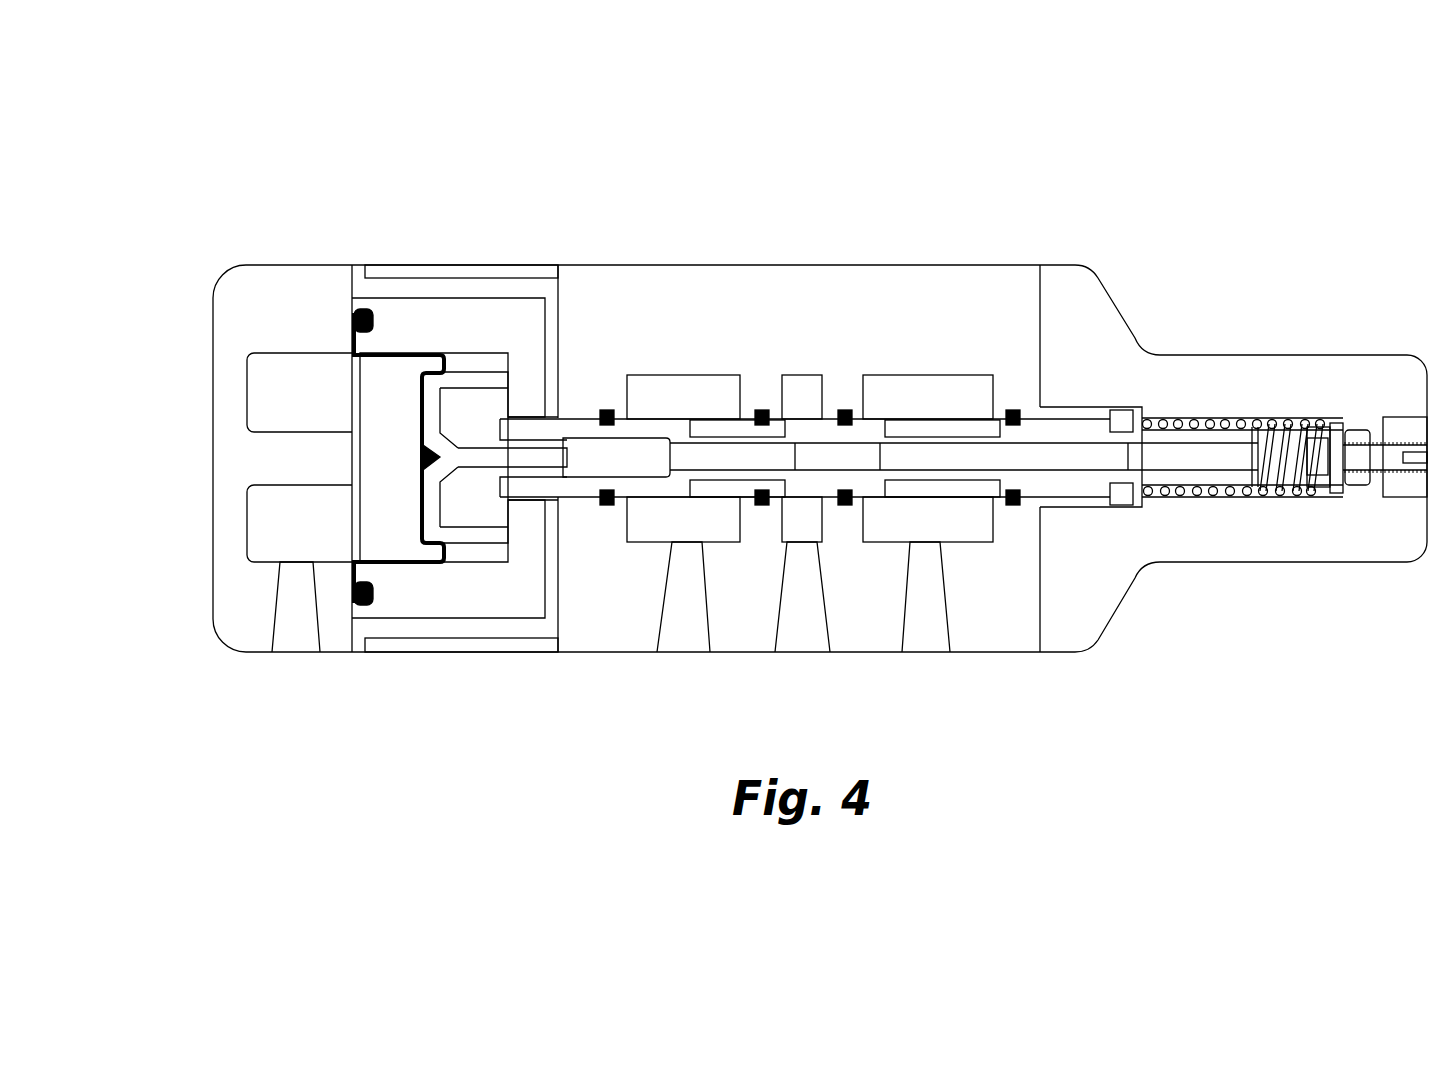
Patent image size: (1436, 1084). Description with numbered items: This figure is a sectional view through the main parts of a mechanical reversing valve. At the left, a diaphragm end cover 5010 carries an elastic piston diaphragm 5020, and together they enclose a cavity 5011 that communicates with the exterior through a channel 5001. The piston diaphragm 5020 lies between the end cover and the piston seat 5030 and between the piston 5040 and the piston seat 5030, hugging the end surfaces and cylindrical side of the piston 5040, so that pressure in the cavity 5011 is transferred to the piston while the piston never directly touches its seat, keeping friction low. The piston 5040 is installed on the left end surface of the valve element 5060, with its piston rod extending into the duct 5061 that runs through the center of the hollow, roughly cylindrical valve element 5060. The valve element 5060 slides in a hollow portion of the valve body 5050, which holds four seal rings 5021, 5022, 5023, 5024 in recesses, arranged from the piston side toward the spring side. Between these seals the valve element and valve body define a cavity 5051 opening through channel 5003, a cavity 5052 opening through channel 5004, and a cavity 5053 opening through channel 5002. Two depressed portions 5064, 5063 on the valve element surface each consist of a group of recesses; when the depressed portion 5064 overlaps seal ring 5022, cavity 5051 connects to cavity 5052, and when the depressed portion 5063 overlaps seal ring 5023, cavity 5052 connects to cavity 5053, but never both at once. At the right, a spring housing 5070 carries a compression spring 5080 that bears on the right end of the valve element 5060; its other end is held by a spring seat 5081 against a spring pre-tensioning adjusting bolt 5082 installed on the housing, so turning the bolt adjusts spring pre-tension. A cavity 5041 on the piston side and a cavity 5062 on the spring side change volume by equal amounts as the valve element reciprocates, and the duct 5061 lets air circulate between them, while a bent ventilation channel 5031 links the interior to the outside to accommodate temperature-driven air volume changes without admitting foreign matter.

The channel 5001 is at (297, 630).
The channel 5002 is at (926, 632).
The channel 5003 is at (686, 632).
The channel 5004 is at (807, 632).
The diaphragm end cover 5010 is at (230, 520).
The cavity 5011 is at (290, 383).
The piston diaphragm 5020 is at (355, 318).
The seal ring 5021 is at (607, 507).
The seal ring 5022 is at (762, 507).
The seal ring 5023 is at (845, 507).
The seal ring 5024 is at (1014, 507).
The piston seat 5030 is at (488, 327).
The ventilation channel 5031 is at (437, 290).
The piston 5040 is at (437, 537).
The cavity 5041 is at (485, 498).
The valve body 5050 is at (585, 325).
The cavity 5051 is at (670, 392).
The cavity 5052 is at (805, 392).
The cavity 5053 is at (930, 382).
The valve element 5060 is at (1066, 432).
The duct 5061 is at (1122, 453).
The cavity 5062 is at (1092, 500).
The depressed portion 5063 is at (930, 484).
The depressed portion 5064 is at (722, 420).
The spring housing 5070 is at (1254, 380).
The compression spring 5080 is at (1283, 490).
The spring seat 5081 is at (1337, 487).
The spring pre-tensioning adjusting bolt 5082 is at (1362, 457).